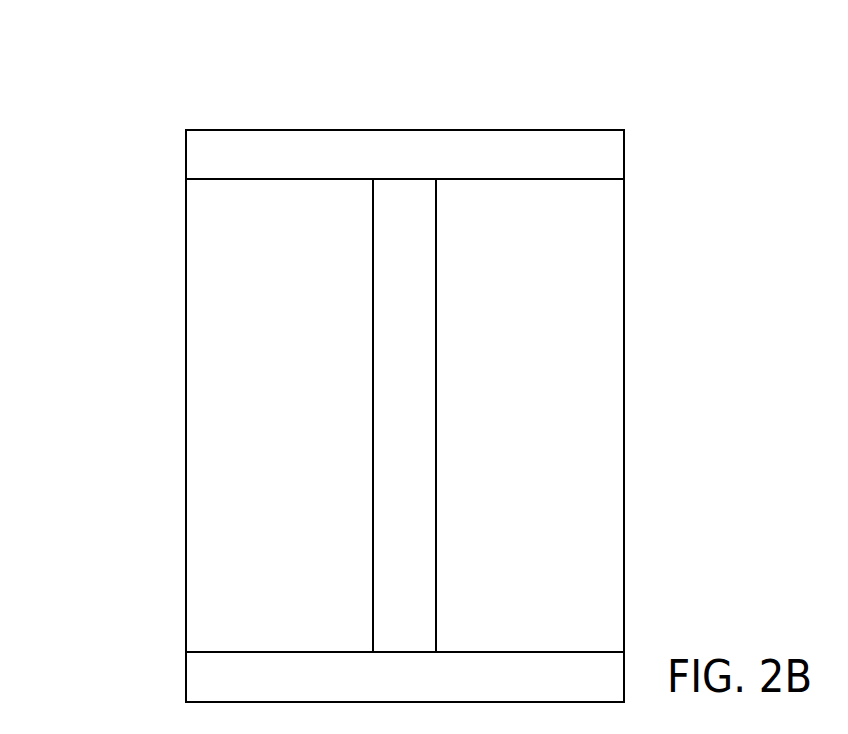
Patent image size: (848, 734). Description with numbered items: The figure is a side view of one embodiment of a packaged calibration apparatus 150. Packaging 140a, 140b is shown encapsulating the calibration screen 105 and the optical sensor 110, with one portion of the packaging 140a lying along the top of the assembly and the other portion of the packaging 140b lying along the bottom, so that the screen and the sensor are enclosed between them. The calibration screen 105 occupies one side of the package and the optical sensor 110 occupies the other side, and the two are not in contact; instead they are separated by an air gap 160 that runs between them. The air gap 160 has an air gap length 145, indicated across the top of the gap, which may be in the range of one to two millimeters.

The packaged calibration apparatus 150 is at (72, 50).
The packaging 140a is at (405, 161).
The packaging 140b is at (405, 669).
The calibration screen 105 is at (301, 415).
The optical sensor 110 is at (518, 415).
The air gap length 145 is at (370, 107).
The air gap 160 is at (387, 278).